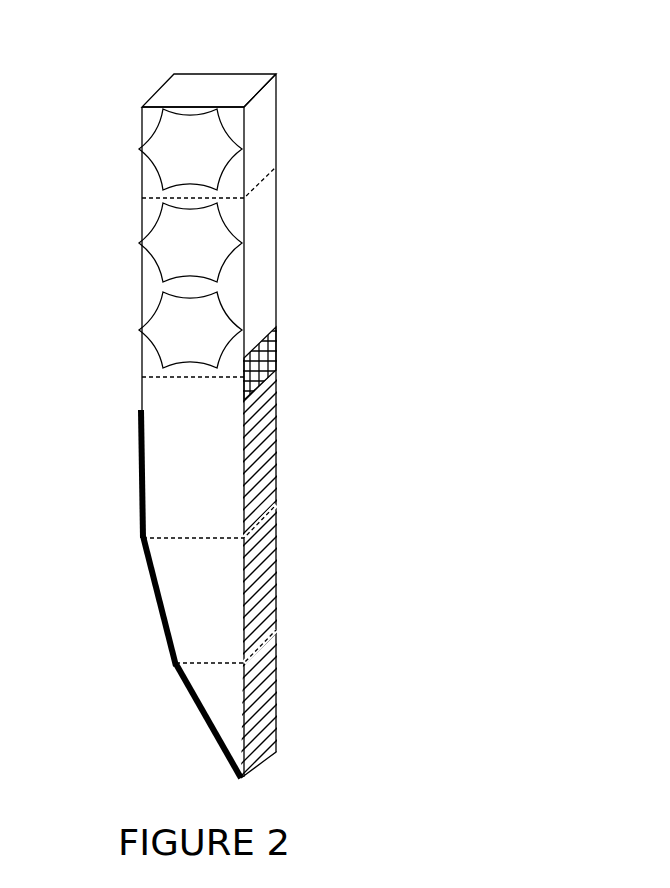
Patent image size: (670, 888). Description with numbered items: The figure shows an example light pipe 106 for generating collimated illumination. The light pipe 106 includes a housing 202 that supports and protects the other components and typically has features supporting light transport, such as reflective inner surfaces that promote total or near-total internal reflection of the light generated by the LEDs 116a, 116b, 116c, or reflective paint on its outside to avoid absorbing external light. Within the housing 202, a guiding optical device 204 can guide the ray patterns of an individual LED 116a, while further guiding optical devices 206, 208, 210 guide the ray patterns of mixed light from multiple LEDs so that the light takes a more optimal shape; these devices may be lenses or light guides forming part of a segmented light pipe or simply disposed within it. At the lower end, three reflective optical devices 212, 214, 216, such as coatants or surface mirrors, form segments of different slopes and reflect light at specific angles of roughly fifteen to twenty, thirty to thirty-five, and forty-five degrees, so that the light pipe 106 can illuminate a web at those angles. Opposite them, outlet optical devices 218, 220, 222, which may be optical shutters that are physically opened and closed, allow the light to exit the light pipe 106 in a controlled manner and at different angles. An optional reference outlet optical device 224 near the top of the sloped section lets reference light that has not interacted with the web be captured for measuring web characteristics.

The light pipe 106 is at (301, 31).
The housing 202 is at (181, 94).
The guiding optical device 204 is at (262, 185).
The LED 116a is at (217, 150).
The LED 116b is at (208, 255).
The LED 116c is at (169, 337).
The guiding optical device 206 is at (144, 379).
The guiding optical device 208 is at (191, 536).
The guiding optical device 210 is at (204, 659).
The reflective optical device 212 is at (137, 481).
The reflective optical device 214 is at (155, 608).
The reflective optical device 216 is at (197, 715).
The outlet optical device 218 is at (273, 466).
The outlet optical device 220 is at (273, 600).
The outlet optical device 222 is at (273, 715).
The reference outlet optical device 224 is at (273, 361).